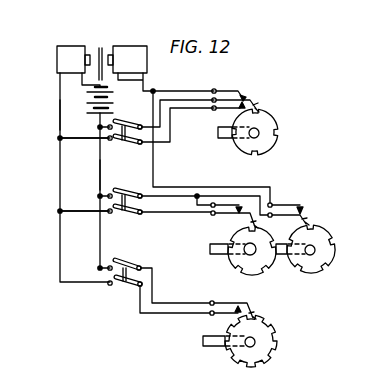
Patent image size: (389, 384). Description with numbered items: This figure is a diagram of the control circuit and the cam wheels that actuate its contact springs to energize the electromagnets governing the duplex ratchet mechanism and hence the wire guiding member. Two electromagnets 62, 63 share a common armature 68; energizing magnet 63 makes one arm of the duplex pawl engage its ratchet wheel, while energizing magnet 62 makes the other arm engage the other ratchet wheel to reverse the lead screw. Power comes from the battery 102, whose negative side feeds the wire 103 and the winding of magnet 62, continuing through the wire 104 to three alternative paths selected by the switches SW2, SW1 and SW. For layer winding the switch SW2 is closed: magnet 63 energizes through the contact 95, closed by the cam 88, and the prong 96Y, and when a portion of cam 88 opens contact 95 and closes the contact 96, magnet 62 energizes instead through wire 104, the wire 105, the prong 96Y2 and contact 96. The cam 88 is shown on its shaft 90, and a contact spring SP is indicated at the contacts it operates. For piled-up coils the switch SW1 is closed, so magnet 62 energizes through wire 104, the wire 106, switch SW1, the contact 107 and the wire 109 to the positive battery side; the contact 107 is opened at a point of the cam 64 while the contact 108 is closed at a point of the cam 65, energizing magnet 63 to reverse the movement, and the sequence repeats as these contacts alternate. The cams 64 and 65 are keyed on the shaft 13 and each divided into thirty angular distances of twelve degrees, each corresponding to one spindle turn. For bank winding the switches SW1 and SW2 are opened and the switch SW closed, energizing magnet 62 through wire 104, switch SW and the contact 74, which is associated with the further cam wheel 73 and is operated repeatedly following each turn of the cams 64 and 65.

The electromagnet 62 is at (72, 46).
The armature 68 is at (100, 48).
The electromagnet 63 is at (133, 46).
The wire 103 is at (82, 85).
The battery 102 is at (93, 110).
The wire 104 is at (59, 112).
The wire 105 is at (87, 139).
The wire 109 is at (97, 173).
The wire 106 is at (88, 213).
The prong of switch SW2 96Y is at (134, 120).
The switch SW2 is at (129, 131).
The prong of switch SW2 96Y2 is at (148, 156).
The switch SW1 is at (125, 212).
The switch SW is at (140, 260).
The contact 95 is at (236, 89).
The spring contact SP is at (253, 103).
The contact 96 is at (226, 105).
The cam 88 is at (275, 150).
The shaft 90 is at (227, 144).
The contact 108 is at (288, 208).
The cam 65 is at (318, 229).
The contact 107 is at (228, 213).
The shaft 13 is at (224, 253).
The cam 64 is at (263, 258).
The contact 74 is at (231, 307).
The ratchet wheel 73 is at (273, 338).